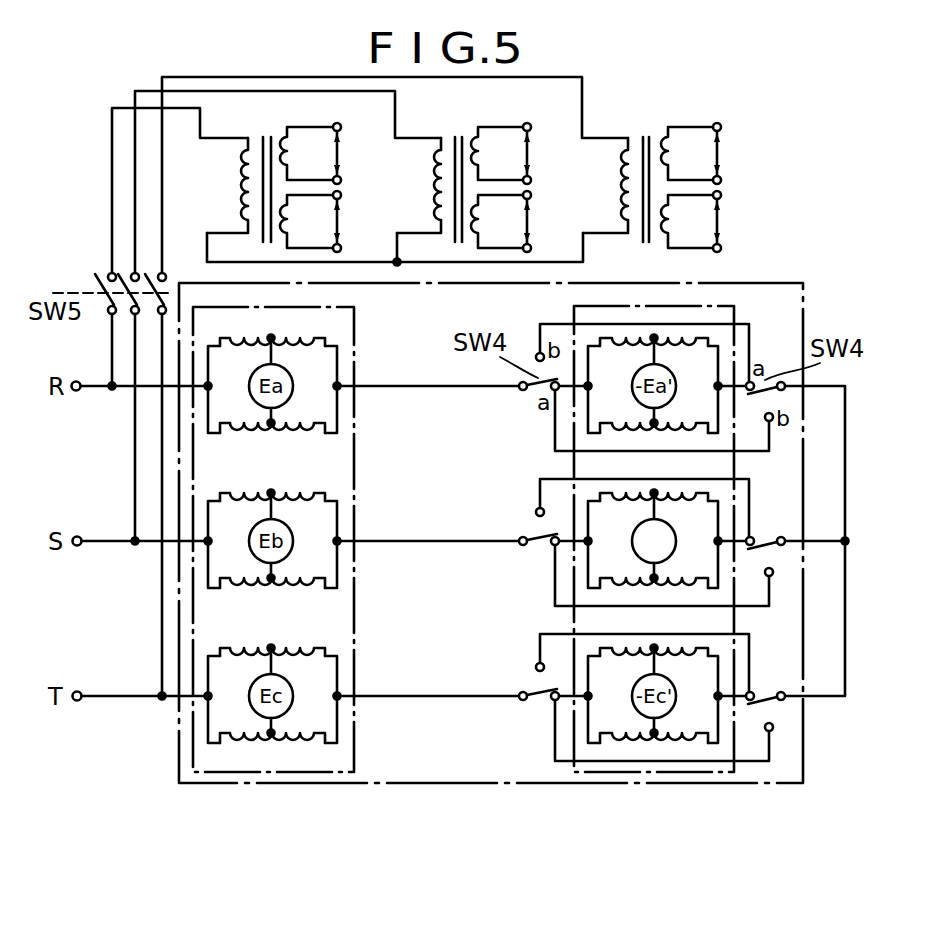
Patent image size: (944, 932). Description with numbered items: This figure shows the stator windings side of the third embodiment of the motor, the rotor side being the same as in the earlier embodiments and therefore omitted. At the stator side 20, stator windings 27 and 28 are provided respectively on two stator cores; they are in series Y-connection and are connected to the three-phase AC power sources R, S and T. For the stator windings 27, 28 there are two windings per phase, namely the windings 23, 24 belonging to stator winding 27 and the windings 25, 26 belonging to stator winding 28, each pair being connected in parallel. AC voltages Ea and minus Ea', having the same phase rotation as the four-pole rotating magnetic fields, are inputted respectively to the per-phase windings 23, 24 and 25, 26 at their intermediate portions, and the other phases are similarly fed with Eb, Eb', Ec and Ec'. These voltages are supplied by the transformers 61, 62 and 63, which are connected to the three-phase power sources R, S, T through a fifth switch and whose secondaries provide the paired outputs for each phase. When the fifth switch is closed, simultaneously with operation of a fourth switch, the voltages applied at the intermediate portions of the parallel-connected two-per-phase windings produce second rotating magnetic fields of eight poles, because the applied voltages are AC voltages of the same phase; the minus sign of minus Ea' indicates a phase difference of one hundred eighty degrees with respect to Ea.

The stator side 20 is at (810, 712).
The winding 23 is at (313, 337).
The winding 24 is at (298, 440).
The winding 25 is at (697, 337).
The winding 26 is at (617, 435).
The stator winding 27 is at (356, 652).
The stator winding 28 is at (573, 613).
The transformer 61 is at (267, 132).
The transformer 62 is at (460, 132).
The transformer 63 is at (645, 130).